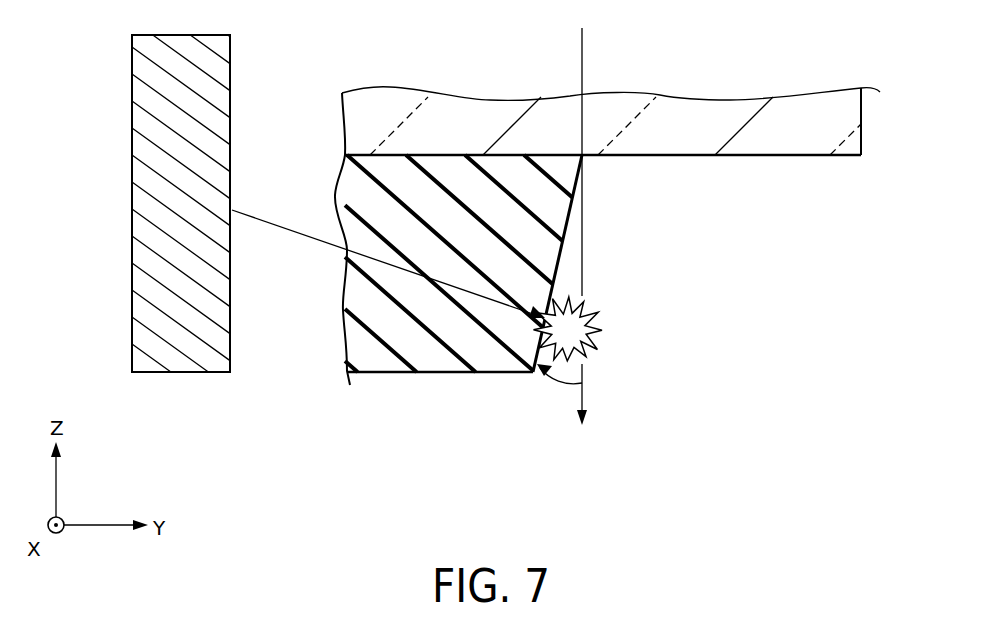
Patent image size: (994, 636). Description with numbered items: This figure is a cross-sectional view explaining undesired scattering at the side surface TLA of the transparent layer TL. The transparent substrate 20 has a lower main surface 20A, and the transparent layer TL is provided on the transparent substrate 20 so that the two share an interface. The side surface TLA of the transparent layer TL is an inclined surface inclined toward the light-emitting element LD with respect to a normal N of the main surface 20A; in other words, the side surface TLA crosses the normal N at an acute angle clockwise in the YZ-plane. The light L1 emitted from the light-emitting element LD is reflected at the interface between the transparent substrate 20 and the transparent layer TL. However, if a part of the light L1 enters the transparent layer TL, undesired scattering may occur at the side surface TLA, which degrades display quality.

The transparent substrate 20 is at (848, 131).
The main surface 20A is at (771, 156).
The transparent layer TL is at (450, 363).
The side surface TLA is at (572, 252).
The light-emitting element LD is at (190, 353).
The light L1 is at (285, 230).
The normal N is at (583, 242).